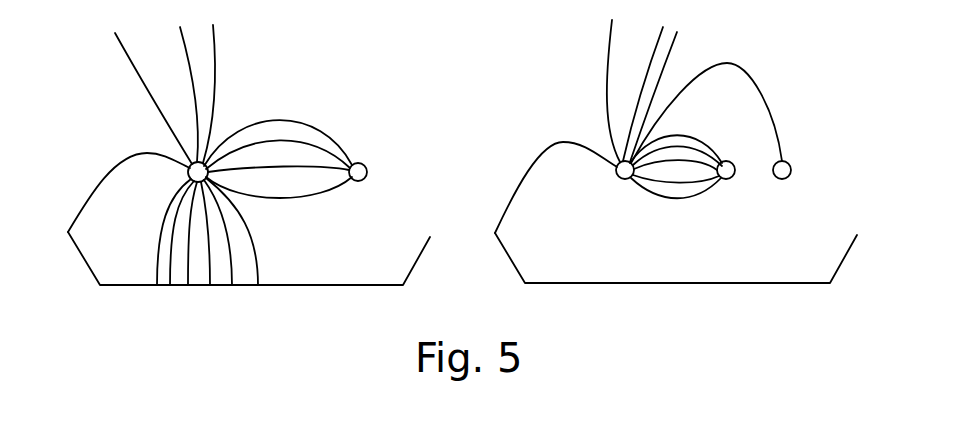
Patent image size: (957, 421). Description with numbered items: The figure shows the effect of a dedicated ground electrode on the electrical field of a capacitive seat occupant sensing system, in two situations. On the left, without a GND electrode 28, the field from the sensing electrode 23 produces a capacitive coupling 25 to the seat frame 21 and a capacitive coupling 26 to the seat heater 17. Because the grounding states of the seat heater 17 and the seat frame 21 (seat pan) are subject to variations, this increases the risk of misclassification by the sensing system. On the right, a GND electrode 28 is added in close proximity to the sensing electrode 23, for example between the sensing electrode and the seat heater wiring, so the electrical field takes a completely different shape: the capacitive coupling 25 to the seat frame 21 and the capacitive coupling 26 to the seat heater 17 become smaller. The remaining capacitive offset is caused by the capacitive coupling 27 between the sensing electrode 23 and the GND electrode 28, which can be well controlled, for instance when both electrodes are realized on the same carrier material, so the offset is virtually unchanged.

The seat heater 17 is at (588, 174).
The seat frame 21 is at (455, 259).
The sensing electrode 23 is at (396, 110).
The capacitive coupling 25 is at (342, 201).
The capacitive coupling 26 is at (493, 120).
The capacitive coupling 27 is at (676, 153).
The GND electrode 28 is at (734, 184).